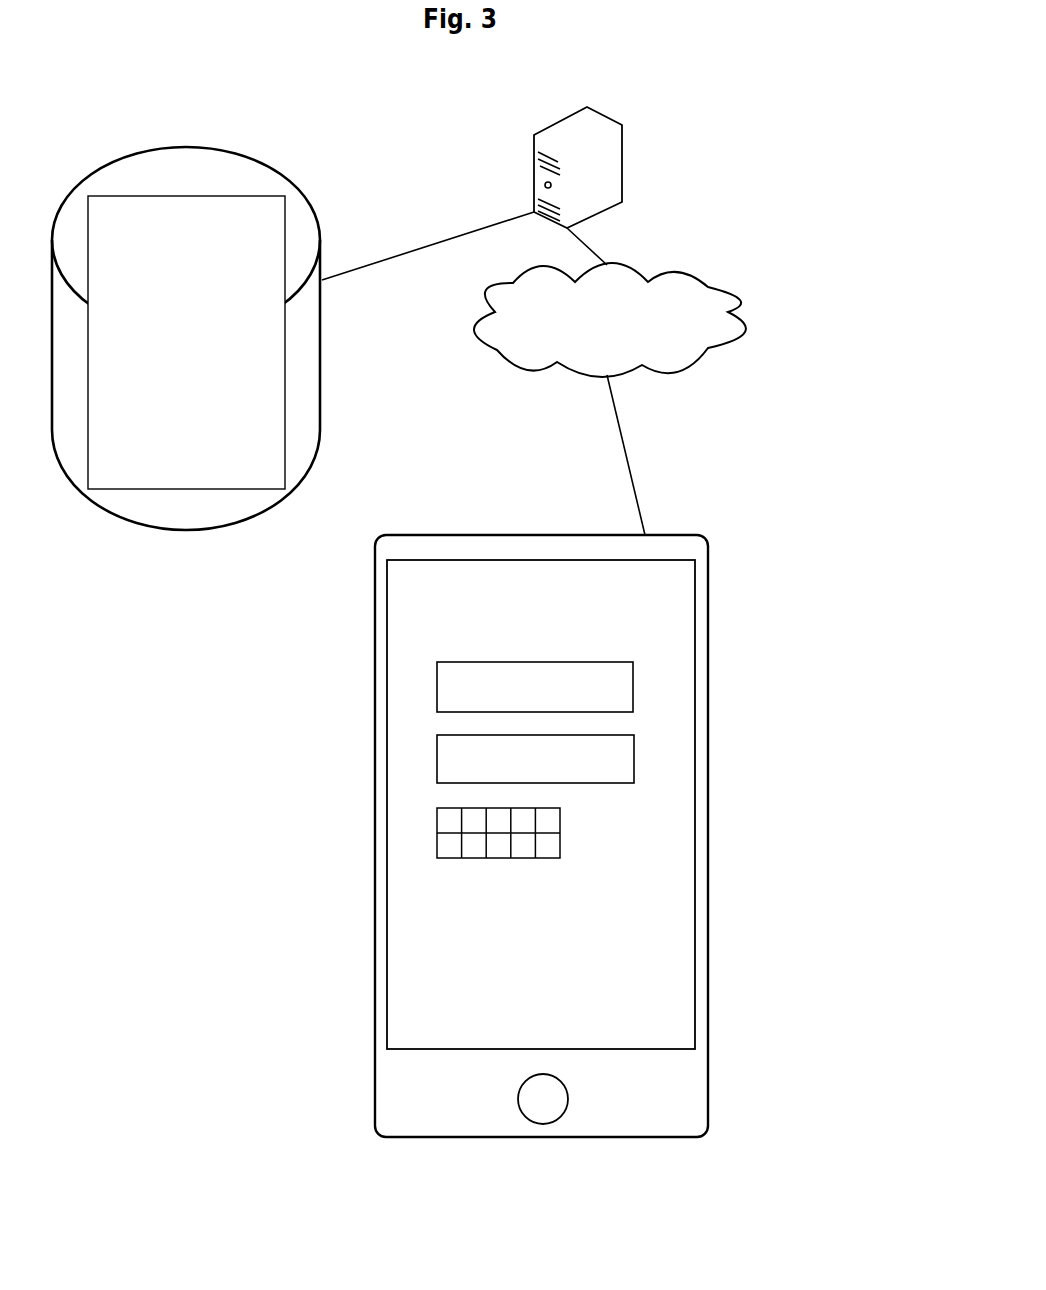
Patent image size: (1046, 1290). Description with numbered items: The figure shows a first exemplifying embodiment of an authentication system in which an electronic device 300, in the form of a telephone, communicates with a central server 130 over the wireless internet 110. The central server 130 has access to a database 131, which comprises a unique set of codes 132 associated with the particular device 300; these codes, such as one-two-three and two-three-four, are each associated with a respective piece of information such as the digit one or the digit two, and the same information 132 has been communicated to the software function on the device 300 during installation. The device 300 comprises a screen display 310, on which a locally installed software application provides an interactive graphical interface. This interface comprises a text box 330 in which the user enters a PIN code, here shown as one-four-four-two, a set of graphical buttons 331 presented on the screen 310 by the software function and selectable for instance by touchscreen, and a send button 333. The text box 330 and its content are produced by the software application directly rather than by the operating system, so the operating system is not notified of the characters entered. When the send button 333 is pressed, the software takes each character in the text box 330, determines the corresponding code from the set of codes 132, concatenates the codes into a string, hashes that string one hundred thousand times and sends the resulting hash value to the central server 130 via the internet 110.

The internet 110 is at (610, 320).
The central server 130 is at (578, 167).
The database 131 is at (186, 336).
The unique set of codes 132 is at (147, 490).
The electronic device 300 is at (707, 812).
The screen display 310 is at (695, 887).
The text box 330 is at (610, 662).
The set of graphical buttons 331 is at (437, 843).
The send button 333 is at (635, 748).